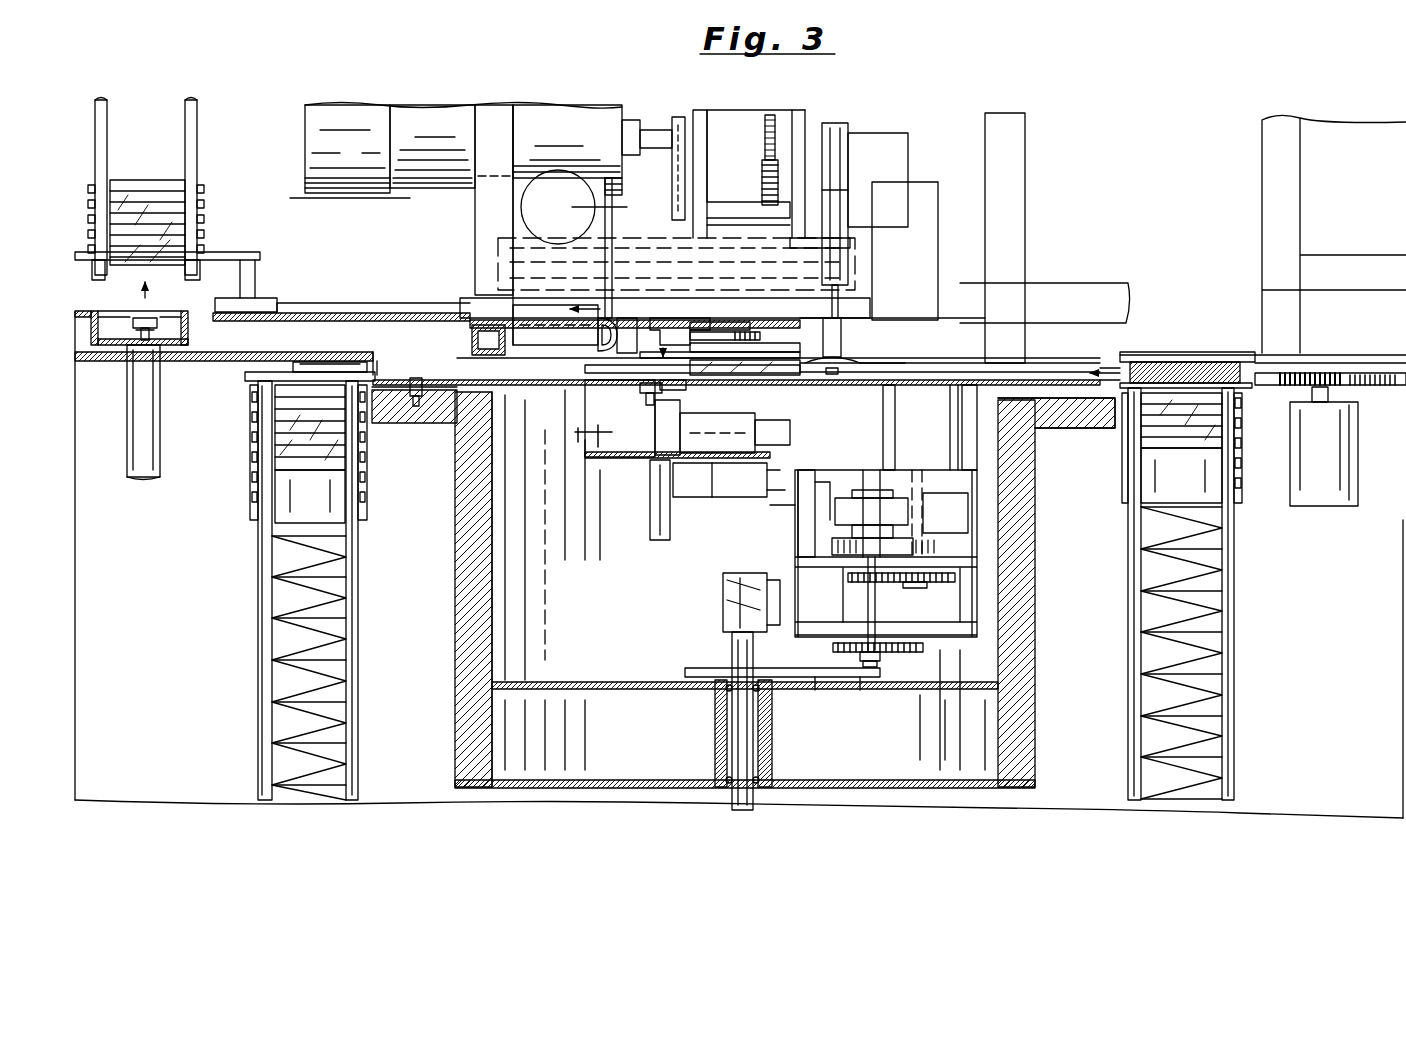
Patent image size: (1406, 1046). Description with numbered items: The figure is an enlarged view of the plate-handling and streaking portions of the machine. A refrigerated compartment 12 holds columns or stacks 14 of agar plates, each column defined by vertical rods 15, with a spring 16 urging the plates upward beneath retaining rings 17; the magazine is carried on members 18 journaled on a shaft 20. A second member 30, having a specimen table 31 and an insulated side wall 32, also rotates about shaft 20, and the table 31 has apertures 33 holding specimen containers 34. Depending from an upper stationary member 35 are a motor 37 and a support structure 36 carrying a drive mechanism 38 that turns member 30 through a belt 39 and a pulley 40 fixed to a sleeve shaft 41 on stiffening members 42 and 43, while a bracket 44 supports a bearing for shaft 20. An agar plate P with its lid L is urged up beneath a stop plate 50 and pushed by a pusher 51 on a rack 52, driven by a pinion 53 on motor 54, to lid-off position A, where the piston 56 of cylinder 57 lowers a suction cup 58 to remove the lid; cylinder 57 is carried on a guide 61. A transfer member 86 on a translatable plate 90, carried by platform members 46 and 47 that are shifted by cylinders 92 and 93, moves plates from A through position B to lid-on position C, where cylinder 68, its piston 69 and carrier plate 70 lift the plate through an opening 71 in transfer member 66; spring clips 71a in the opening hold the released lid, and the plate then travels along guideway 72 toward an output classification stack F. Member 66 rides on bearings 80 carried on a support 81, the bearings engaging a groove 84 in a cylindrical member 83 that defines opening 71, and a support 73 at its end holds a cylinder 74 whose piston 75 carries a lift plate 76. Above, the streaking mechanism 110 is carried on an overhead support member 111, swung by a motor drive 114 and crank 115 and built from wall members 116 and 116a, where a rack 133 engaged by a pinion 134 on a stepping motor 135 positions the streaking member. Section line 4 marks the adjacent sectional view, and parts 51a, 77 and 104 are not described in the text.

The section line 4- 4 is at (310, 197).
The classification stack F is at (152, 104).
The tote guide posts 77 is at (104, 152).
The lift plate 76 is at (166, 296).
The step support 104 is at (275, 312).
The guideway 72 is at (337, 312).
The transfer member 66 is at (446, 316).
The support 73 is at (190, 338).
The piston 75 is at (135, 331).
The cylinder 74 is at (130, 432).
The journaled members 18 is at (250, 378).
The retaining rings 17 is at (335, 370).
The columns of agar plates 14 is at (256, 722).
The vertical rods 15 is at (350, 642).
The spring 16 is at (302, 628).
The agar plate P is at (280, 470).
The stop plate 50 is at (1174, 352).
The transfer slide block 51a is at (1252, 368).
The pusher 51 is at (1068, 372).
The pinion 53 is at (1330, 372).
The rack 52 is at (1383, 372).
The motor 54 is at (1322, 480).
The lid L is at (885, 372).
The apertures 33 is at (425, 418).
The specimen containers 34 is at (416, 380).
The second member 30 is at (448, 670).
The insulated side wall 32 is at (1022, 590).
The specimen holding ring or table 31 is at (1040, 428).
The refrigerated compartment 12 is at (367, 773).
The stiffening member 43 is at (903, 785).
The support 81 is at (533, 337).
The spring clips 71a is at (604, 330).
The opening 71 is at (630, 330).
The lid-on position C is at (656, 310).
The cylindrical member 83 is at (715, 322).
The groove 84 is at (735, 332).
The bearings 80 is at (762, 343).
The translatable plate 90 is at (640, 368).
The piston 69 is at (640, 405).
The carrier plate 70 is at (668, 383).
The transfer member 86 is at (838, 378).
The position B is at (826, 354).
The cup 58 is at (842, 352).
The lid-off position A is at (878, 360).
The motor drive 114 is at (555, 120).
The crank 115 is at (676, 172).
The overhead support member 111 is at (700, 106).
The wall member 116 is at (712, 130).
The streaking mechanism 110 is at (812, 112).
The wall member 116a is at (822, 130).
The cylinder 57 is at (848, 160).
The rack 133 is at (765, 139).
The pinion 134 is at (765, 181).
The stepping motor 135 is at (908, 160).
The guide 61 is at (856, 268).
The piston 56 is at (860, 300).
The movable platform member 46 is at (648, 410).
The cylinder 92 is at (772, 438).
The cylinder 93 is at (735, 480).
The movable platform member 47 is at (716, 470).
The cylinder 68 is at (650, 532).
The support structure 36 is at (846, 468).
The motor 37 is at (940, 495).
The drive mechanism 38 is at (905, 630).
The bracket 44 is at (725, 594).
The pulley 40 is at (700, 668).
The shaft 20 is at (740, 744).
The sleeve shaft 41 is at (775, 756).
The belt 39 is at (852, 680).
The stiffening member 42 is at (936, 692).
The upper stationary member 35 is at (958, 378).